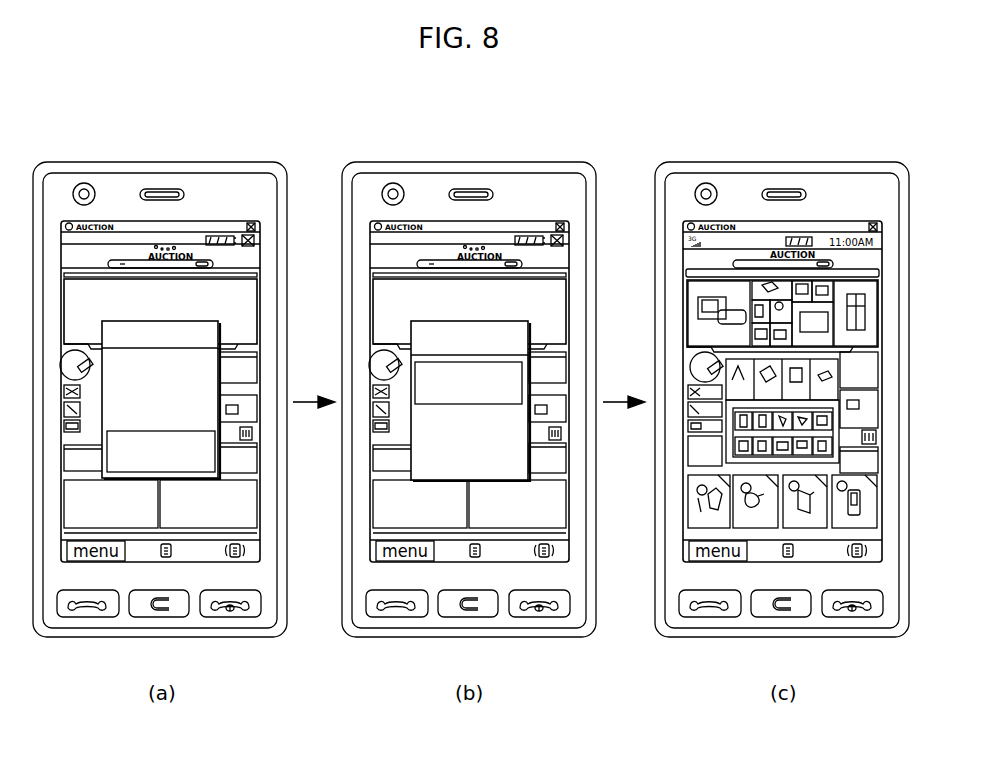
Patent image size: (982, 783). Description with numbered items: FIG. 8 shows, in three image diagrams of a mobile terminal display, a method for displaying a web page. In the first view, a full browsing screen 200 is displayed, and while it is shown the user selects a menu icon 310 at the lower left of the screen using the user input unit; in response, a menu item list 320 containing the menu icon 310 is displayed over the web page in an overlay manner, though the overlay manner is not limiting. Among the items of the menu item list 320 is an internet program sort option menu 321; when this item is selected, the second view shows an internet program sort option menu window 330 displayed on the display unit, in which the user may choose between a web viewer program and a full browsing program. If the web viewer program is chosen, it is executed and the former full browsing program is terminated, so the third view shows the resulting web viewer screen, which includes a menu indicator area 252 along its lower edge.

The full browsing screen 200 is at (127, 221).
The menu icon 310 is at (117, 562).
The menu item list 320 is at (216, 394).
The internet program sort option menu 321 is at (202, 465).
The internet program sort option menu window 330 is at (508, 322).
The menu indicator area 252 is at (686, 544).